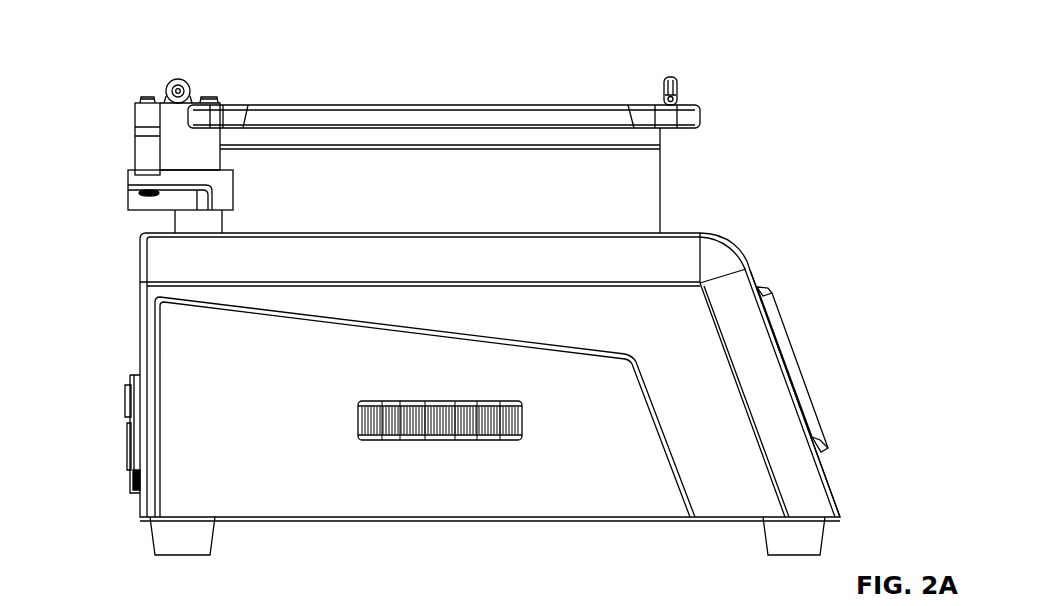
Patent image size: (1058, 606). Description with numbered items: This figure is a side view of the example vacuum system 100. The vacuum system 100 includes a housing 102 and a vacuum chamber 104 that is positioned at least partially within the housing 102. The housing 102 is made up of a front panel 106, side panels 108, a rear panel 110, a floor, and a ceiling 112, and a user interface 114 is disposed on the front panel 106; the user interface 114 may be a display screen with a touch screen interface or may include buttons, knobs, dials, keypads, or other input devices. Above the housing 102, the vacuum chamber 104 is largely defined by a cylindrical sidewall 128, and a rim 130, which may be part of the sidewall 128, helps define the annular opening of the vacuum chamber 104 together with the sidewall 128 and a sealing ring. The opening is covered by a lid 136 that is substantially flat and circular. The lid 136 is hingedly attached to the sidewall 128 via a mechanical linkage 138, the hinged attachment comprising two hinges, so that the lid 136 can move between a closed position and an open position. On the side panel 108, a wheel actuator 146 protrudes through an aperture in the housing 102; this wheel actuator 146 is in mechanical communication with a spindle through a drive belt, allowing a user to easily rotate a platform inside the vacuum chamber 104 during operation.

The vacuum system 100 is at (158, 47).
The housing 102 is at (139, 271).
The vacuum chamber 104 is at (328, 90).
The front panel 106 is at (832, 487).
The side panel 108 is at (624, 503).
The rear panel 110 is at (138, 350).
The ceiling 112 is at (692, 232).
The user interface 114 is at (790, 345).
The sidewall 128 is at (648, 170).
The rim 130 is at (655, 137).
The lid 136 is at (436, 104).
The mechanical linkage 138 is at (134, 118).
The wheel actuator 146 is at (428, 441).